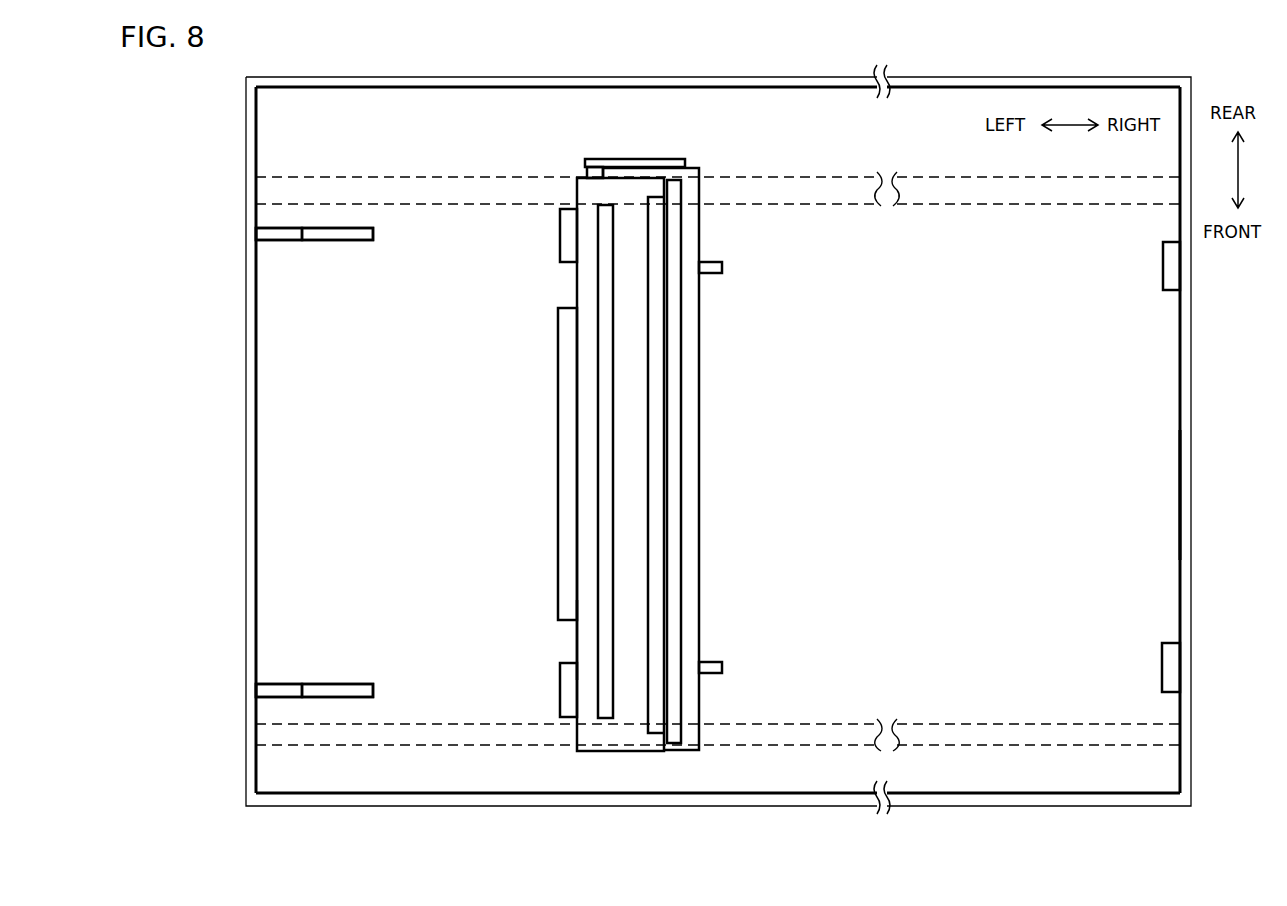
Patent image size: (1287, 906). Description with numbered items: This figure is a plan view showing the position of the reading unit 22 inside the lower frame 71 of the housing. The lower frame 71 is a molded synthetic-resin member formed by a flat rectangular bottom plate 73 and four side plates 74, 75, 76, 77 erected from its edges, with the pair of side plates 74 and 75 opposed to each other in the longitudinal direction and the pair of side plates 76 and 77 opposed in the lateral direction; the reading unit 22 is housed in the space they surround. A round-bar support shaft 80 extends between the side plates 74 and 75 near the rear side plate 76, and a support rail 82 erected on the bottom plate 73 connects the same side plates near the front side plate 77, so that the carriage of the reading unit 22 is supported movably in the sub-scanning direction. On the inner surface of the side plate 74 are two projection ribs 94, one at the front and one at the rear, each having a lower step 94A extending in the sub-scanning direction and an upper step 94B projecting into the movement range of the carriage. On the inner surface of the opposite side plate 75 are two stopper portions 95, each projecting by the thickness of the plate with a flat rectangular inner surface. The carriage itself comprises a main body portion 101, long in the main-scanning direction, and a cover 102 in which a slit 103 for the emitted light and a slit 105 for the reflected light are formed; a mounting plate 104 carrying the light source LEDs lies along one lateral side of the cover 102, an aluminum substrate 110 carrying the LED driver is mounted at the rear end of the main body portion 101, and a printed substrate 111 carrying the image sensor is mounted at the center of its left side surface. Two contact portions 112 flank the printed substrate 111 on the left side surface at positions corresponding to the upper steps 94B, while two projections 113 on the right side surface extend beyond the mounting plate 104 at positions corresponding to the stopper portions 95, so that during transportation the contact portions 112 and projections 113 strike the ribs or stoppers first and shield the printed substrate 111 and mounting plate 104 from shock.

The reading unit 22 is at (758, 371).
The lower frame 71 is at (245, 140).
The bottom plate 73 is at (1130, 515).
The side plate 74 is at (258, 350).
The side plate 75 is at (1178, 372).
The side plate 76 is at (953, 92).
The side plate 77 is at (980, 792).
The support shaft 80 is at (816, 176).
The support rail 82 is at (848, 723).
The projection rib 94 is at (373, 243).
The lower step 94A is at (333, 228).
The upper step 94B is at (287, 228).
The stopper portion 95 is at (1162, 253).
The main body portion 101 is at (700, 630).
The cover 102 is at (589, 638).
The slit 103 is at (668, 547).
The mounting plate 104 is at (690, 445).
The slit 105 is at (598, 283).
The aluminum substrate 110 is at (650, 159).
The printed substrate 111 is at (558, 370).
The contact portion 112 is at (561, 240).
The projection 113 is at (722, 265).